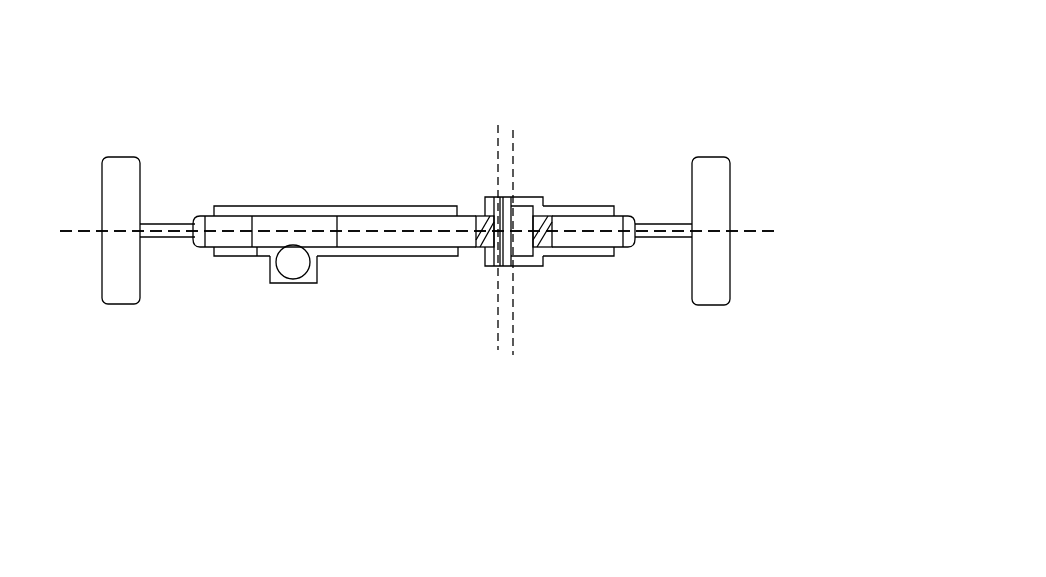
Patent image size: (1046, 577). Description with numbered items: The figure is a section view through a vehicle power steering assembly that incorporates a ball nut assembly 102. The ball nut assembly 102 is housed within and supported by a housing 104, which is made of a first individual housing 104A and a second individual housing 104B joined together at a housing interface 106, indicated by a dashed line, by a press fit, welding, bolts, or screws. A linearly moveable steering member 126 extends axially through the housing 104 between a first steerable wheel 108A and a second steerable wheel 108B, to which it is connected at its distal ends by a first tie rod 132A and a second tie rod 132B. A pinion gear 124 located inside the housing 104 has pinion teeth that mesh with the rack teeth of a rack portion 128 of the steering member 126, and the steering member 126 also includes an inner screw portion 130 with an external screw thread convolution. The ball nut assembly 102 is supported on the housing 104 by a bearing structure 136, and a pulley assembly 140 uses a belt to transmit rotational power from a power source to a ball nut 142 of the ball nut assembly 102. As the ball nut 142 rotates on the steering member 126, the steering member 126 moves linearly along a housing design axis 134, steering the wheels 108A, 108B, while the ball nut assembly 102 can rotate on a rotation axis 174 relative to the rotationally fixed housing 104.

The ball nut assembly 102 is at (526, 288).
The housing 104 is at (326, 158).
The first individual housing 104A is at (295, 207).
The second individual housing 104B is at (578, 206).
The housing interface 106 is at (512, 348).
The first steerable wheel 108A is at (122, 157).
The second steerable wheel 108B is at (711, 157).
The pinion gear 124 is at (294, 284).
The steering member 126 is at (393, 211).
The rack portion 128 is at (257, 257).
The inner screw portion 130 is at (548, 258).
The first tie rod 132A is at (167, 224).
The second tie rod 132B is at (662, 224).
The housing design axis 134 is at (752, 227).
The bearing structure 136 is at (489, 184).
The pulley assembly 140 is at (520, 207).
The ball nut 142 is at (478, 258).
The rotation axis 174 is at (498, 322).